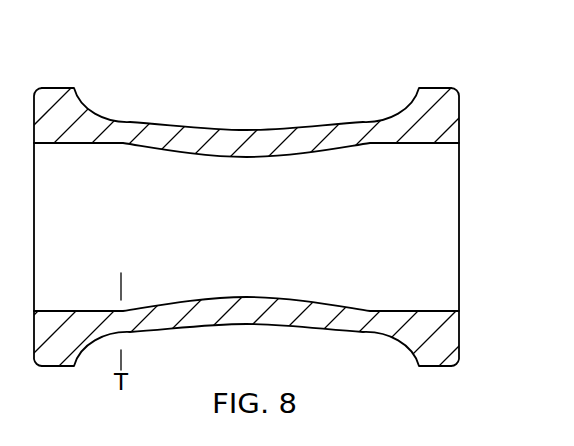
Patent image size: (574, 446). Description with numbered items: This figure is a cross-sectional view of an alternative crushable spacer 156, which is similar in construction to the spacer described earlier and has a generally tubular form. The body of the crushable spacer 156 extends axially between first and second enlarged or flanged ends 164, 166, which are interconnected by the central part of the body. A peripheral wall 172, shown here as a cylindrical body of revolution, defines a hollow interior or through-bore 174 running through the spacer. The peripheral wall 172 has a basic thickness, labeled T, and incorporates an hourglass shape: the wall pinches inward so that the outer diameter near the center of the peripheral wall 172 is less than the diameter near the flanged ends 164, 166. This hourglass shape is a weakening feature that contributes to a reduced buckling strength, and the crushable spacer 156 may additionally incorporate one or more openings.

The crushable spacer 156 is at (287, 221).
The peripheral wall 172 is at (120, 126).
The through-bore 174 is at (420, 144).
The first flanged end 164 is at (48, 360).
The second flanged end 166 is at (423, 360).